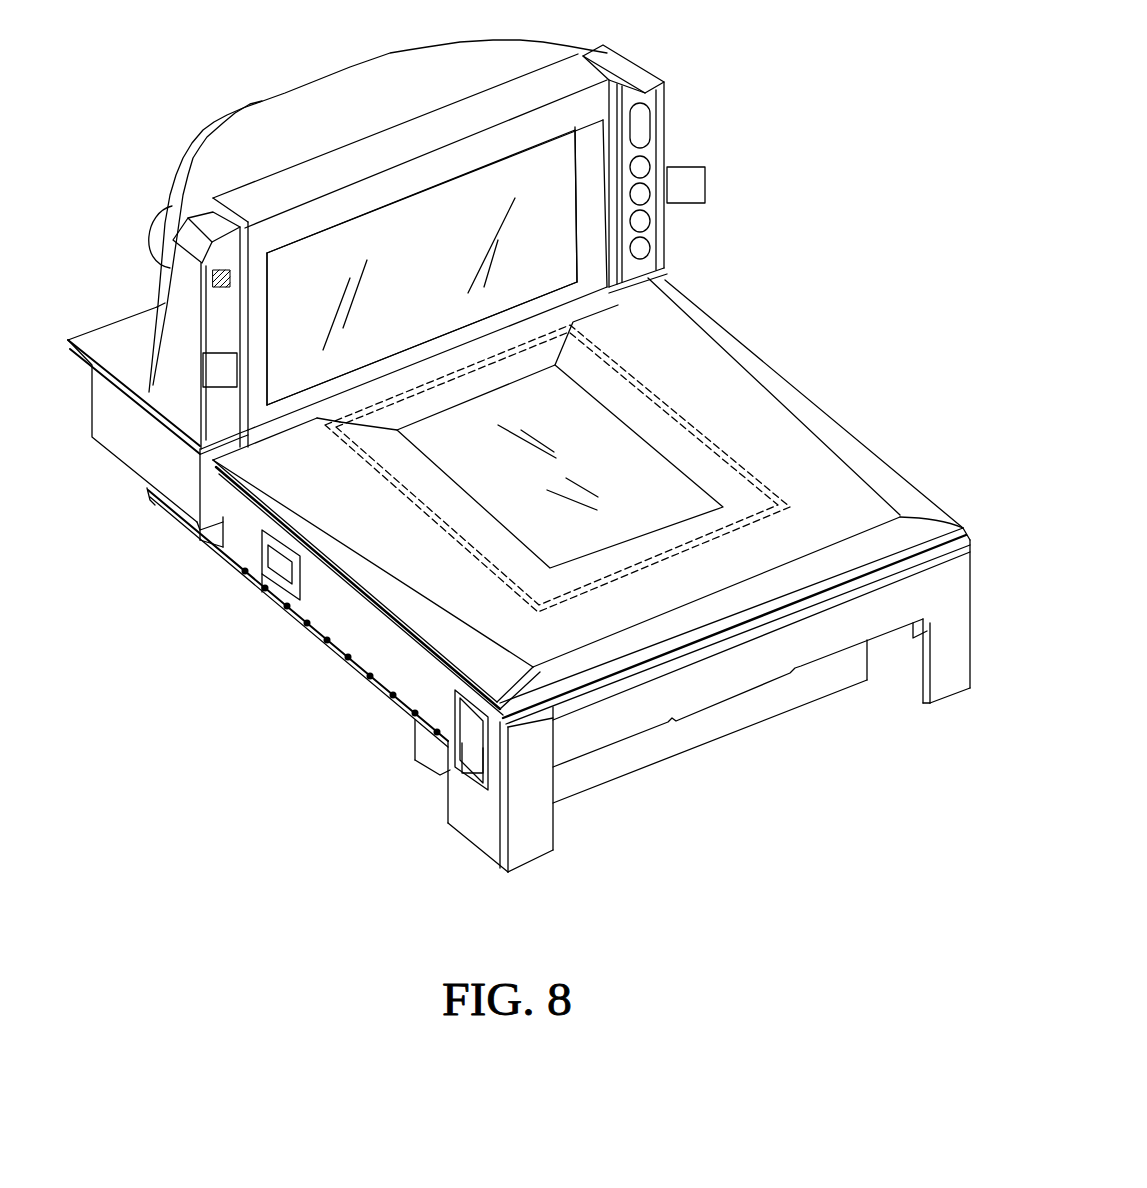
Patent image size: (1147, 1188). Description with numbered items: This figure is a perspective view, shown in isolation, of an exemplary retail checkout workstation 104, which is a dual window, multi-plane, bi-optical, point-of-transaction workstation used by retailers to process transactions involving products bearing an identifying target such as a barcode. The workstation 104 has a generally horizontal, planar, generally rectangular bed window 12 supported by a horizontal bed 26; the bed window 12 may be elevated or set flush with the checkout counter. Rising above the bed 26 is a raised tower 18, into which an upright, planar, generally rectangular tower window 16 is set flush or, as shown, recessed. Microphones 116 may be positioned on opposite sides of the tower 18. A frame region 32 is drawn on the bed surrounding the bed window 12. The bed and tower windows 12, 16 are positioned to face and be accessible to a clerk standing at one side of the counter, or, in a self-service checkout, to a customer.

The checkout workstation 104 is at (526, 445).
The tower 18 is at (632, 58).
The microphones 116 is at (672, 167).
The tower window 16 is at (543, 177).
The platter frame / bezel 32 is at (660, 393).
The bed window 12 is at (653, 480).
The bed 26 is at (900, 513).